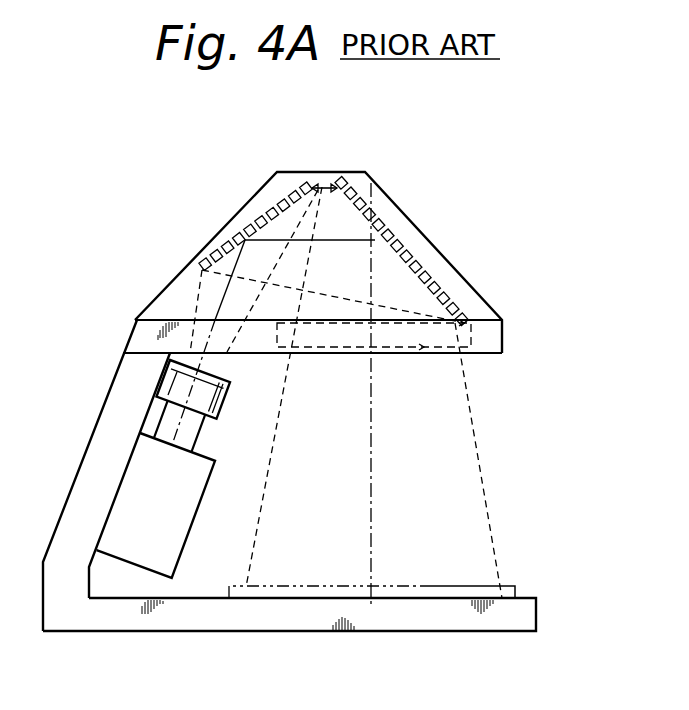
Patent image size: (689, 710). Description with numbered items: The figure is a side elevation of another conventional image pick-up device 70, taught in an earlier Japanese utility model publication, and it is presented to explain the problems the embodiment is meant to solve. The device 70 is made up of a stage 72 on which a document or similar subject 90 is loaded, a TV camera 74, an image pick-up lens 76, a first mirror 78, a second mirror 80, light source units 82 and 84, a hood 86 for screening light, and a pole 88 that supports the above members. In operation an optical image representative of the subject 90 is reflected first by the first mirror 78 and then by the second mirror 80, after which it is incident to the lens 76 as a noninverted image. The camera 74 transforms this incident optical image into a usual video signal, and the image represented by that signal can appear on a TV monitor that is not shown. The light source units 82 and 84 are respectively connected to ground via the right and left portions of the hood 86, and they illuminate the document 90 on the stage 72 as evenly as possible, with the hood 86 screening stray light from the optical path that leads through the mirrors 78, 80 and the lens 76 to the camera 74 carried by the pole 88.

The image pick-up device 70 is at (557, 234).
The stage 72 is at (313, 618).
The TV camera 74 is at (126, 497).
The image pick-up lens 76 is at (164, 368).
The first mirror 78 is at (418, 252).
The second mirror 80 is at (241, 206).
The light source unit 82 is at (424, 356).
The light source unit 84 is at (420, 350).
The hood 86 is at (336, 172).
The pole 88 is at (110, 414).
The subject 90 is at (430, 586).